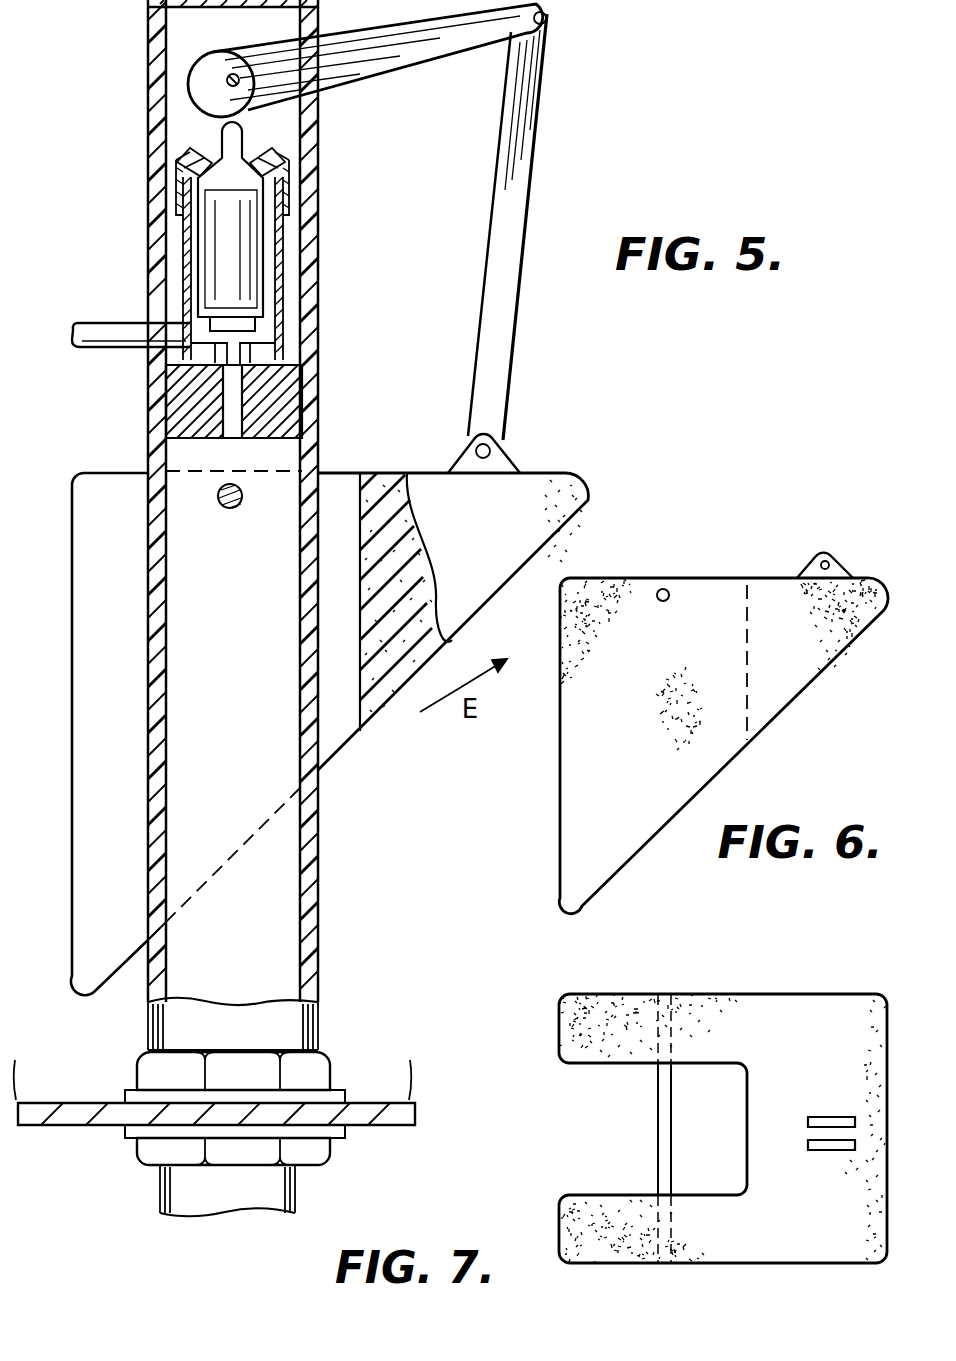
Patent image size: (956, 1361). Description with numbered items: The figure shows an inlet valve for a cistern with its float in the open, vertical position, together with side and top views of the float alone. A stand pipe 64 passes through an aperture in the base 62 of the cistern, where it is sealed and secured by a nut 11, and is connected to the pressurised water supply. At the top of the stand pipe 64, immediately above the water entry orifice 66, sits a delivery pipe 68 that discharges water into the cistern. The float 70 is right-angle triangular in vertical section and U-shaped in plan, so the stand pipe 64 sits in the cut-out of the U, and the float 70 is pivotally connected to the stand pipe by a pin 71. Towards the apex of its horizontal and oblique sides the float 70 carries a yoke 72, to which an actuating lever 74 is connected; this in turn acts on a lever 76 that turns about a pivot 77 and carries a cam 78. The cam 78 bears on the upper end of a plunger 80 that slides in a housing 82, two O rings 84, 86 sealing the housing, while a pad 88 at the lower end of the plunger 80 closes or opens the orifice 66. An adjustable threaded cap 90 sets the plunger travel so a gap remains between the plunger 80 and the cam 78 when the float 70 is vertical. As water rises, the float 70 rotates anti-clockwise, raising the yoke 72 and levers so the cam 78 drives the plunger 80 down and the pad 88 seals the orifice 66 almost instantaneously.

In FIG. 5, the nut 11 is at (165, 1147).
In FIG. 5, the base or lower surface 62 is at (75, 1103).
In FIG. 5, the stand pipe 64 is at (312, 897).
In FIG. 5, the water entry orifice 66 is at (232, 396).
In FIG. 5, the delivery pipe 68 is at (78, 340).
In FIG. 5, the float 70 is at (366, 737).
In FIG. 6, the float 70 is at (729, 578).
In FIG. 7, the float 70 is at (838, 990).
In FIG. 5, the pin 71 is at (226, 507).
In FIG. 6, the pin 71 is at (666, 602).
In FIG. 7, the pin 71 is at (663, 1122).
In FIG. 5, the yoke 72 is at (500, 458).
In FIG. 6, the yoke 72 is at (830, 556).
In FIG. 7, the yoke 72 is at (833, 1115).
In FIG. 5, the actuating lever 74 is at (505, 130).
In FIG. 5, the lever 76 is at (395, 52).
In FIG. 5, the pivot 77 is at (210, 72).
In FIG. 5, the cam 78 is at (208, 102).
In FIG. 5, the plunger 80 is at (228, 135).
In FIG. 5, the housing 82 is at (190, 295).
In FIG. 5, the O ring 84 is at (298, 162).
In FIG. 5, the O ring 86 is at (285, 290).
In FIG. 5, the pad 88 is at (256, 335).
In FIG. 5, the adjustable threaded cap 90 is at (204, 154).